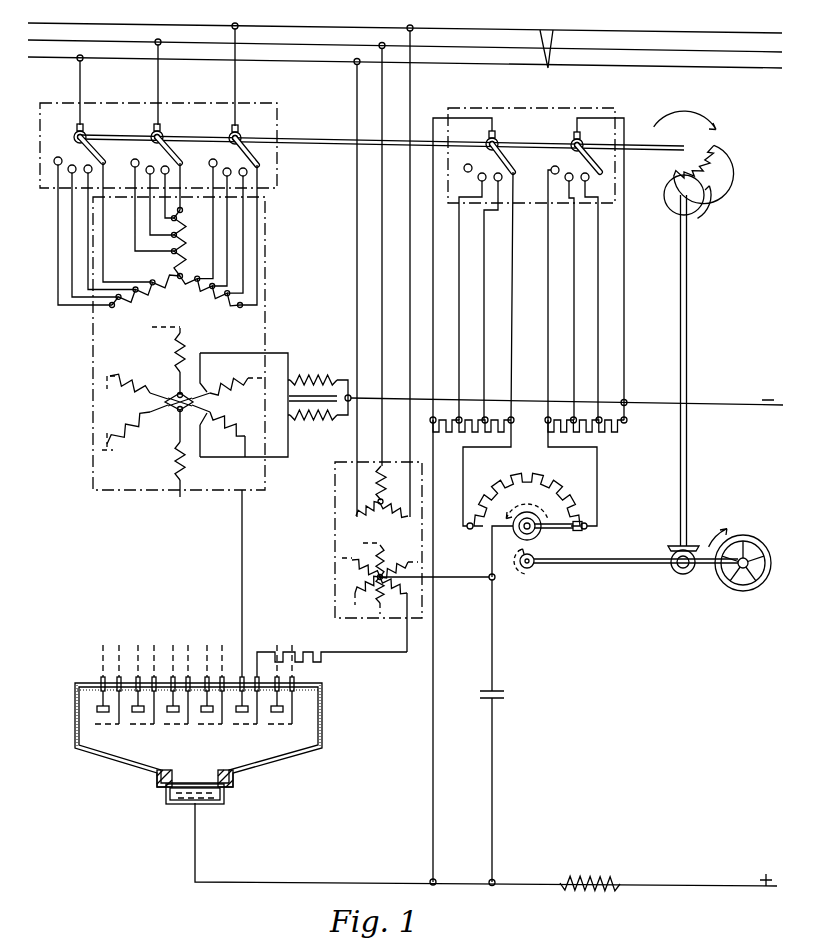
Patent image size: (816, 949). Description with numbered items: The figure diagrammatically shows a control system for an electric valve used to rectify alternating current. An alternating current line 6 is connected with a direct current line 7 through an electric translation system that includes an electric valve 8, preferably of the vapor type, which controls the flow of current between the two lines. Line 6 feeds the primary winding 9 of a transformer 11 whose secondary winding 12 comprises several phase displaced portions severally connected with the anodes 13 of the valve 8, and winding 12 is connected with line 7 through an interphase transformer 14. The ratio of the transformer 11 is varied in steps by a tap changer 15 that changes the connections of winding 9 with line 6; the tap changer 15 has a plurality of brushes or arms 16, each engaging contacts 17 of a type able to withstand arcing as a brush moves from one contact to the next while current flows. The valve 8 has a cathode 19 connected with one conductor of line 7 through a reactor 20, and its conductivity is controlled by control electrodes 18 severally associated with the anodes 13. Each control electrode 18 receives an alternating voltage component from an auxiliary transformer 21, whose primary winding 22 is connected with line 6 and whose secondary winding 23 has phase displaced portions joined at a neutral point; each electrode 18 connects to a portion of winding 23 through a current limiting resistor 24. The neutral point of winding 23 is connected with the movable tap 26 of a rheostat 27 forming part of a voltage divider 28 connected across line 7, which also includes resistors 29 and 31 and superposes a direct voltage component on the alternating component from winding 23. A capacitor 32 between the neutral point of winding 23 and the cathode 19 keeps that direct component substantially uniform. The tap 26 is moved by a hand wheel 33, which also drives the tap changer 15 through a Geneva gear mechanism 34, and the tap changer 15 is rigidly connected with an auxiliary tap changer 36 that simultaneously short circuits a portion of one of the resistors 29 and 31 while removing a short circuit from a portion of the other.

The alternating current line 6 is at (405, 39).
The direct current line 7 is at (489, 634).
The electric valve 8 is at (115, 758).
The primary winding 9 is at (147, 299).
The transformer 11 is at (91, 348).
The secondary winding 12 is at (146, 431).
The anodes 13 is at (236, 714).
The interphase transformer 14 is at (303, 377).
The tap changer 15 is at (158, 137).
The brushes or arms 16 is at (253, 162).
The contacts 17 is at (281, 170).
The control electrodes 18 is at (256, 726).
The cathode 19 is at (185, 805).
The reactor 20 is at (588, 876).
The auxiliary transformer 21 is at (333, 536).
The primary winding 22 is at (383, 274).
The secondary winding 23 is at (363, 573).
The current limiting resistor 24 is at (298, 647).
The movable tap 26 is at (553, 533).
The rheostat 27 is at (518, 471).
The voltage divider 28 is at (597, 480).
The resistor 29 is at (468, 432).
The resistor 31 is at (622, 432).
The capacitor 32 is at (503, 692).
The hand wheel 33 is at (748, 538).
The Geneva gear mechanism 34 is at (666, 193).
The auxiliary tap changer 36 is at (560, 106).